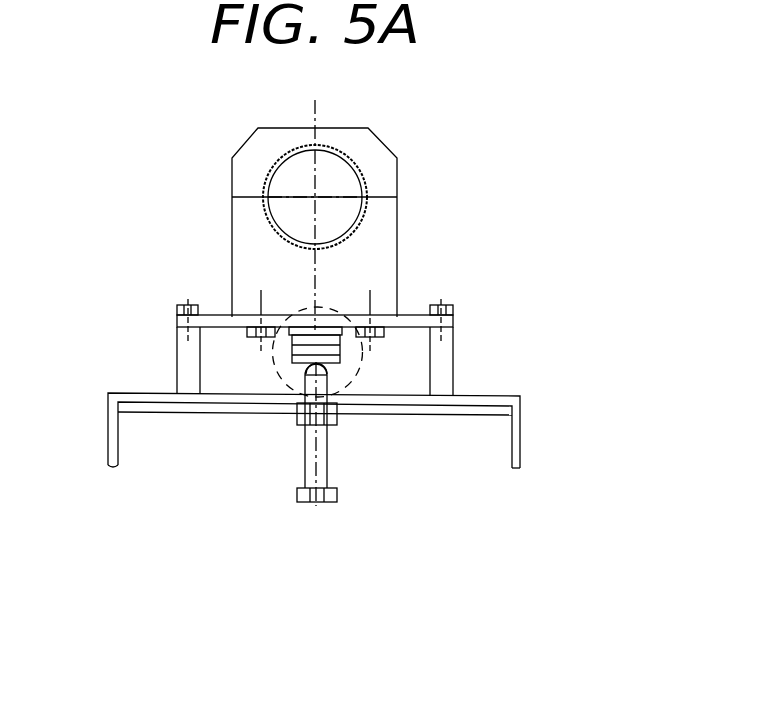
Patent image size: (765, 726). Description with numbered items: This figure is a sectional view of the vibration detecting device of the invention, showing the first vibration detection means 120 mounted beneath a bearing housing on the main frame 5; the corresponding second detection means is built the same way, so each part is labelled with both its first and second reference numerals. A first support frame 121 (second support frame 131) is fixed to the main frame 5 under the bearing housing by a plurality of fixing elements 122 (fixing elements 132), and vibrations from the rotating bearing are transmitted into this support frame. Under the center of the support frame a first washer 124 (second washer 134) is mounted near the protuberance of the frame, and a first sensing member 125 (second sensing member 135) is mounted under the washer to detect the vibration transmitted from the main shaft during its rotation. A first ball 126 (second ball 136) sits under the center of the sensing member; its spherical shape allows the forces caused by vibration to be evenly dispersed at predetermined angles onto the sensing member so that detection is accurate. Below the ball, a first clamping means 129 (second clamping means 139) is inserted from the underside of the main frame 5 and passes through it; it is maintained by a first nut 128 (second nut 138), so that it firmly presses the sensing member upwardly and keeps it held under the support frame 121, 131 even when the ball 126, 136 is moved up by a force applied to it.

The main frame 5 is at (108, 392).
The first vibration detection means 120 is at (314, 215).
The first support frame 121 is at (218, 313).
The second support frame 131 is at (263, 260).
The fixing elements 122 is at (185, 317).
The fixing elements 132 is at (292, 395).
The first washer 124 is at (473, 429).
The second washer 134 is at (473, 429).
The first sensing member 125 is at (467, 462).
The second sensing member 135 is at (467, 462).
The first ball 126 is at (238, 492).
The second ball 136 is at (238, 492).
The first nut 128 is at (467, 490).
The second nut 138 is at (467, 490).
The first clamping means 129 is at (305, 487).
The second clamping means 139 is at (303, 467).